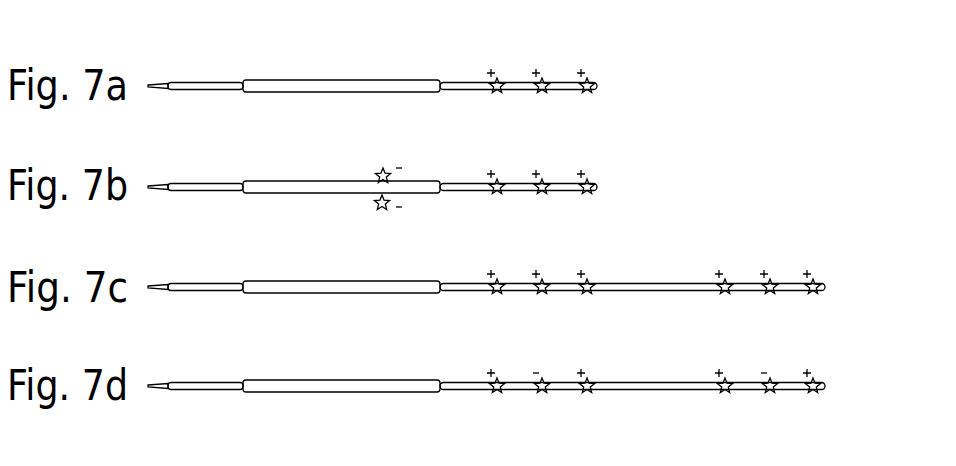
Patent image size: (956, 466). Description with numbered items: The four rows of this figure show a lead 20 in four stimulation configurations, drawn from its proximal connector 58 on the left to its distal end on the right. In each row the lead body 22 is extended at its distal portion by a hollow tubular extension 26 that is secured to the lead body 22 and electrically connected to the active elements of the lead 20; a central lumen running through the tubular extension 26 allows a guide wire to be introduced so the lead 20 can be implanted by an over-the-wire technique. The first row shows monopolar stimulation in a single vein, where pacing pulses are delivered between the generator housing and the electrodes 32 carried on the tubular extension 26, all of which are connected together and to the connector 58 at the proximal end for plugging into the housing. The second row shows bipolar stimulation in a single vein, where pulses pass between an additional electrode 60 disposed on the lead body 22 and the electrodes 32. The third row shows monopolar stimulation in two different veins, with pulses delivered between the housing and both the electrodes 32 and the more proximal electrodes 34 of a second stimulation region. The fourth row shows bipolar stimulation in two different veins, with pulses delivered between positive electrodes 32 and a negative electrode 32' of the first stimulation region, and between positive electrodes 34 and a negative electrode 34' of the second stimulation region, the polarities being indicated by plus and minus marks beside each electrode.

In FIG. 7a, the lead 20 is at (400, 82).
In FIG. 7b, the lead 20 is at (398, 181).
In FIG. 7c, the lead 20 is at (509, 283).
In FIG. 7d, the lead 20 is at (509, 381).
In FIG. 7a, the lead body 22 is at (410, 80).
In FIG. 7b, the lead body 22 is at (422, 181).
In FIG. 7c, the lead body 22 is at (412, 281).
In FIG. 7d, the lead body 22 is at (415, 380).
In FIG. 7a, the hollow tubular extension 26 is at (457, 82).
In FIG. 7b, the hollow tubular extension 26 is at (457, 183).
In FIG. 7c, the hollow tubular extension 26 is at (457, 283).
In FIG. 7d, the hollow tubular extension 26 is at (457, 382).
In FIG. 7a, the electrodes 32 is at (569, 52).
In FIG. 7b, the electrodes 32 is at (567, 151).
In FIG. 7c, the electrodes 32 is at (567, 251).
In FIG. 7d, the electrodes 32 is at (567, 350).
In FIG. 7d, the negative electrode 32' is at (571, 349).
In FIG. 7c, the electrodes 34 is at (792, 251).
In FIG. 7d, the electrodes 34 is at (792, 349).
In FIG. 7d, the negative electrode 34' is at (796, 349).
In FIG. 7a, the connector 58 is at (177, 90).
In FIG. 7b, the connector 58 is at (177, 191).
In FIG. 7c, the connector 58 is at (177, 291).
In FIG. 7d, the connector 58 is at (177, 390).
In FIG. 7b, the additional electrode 60 is at (377, 167).